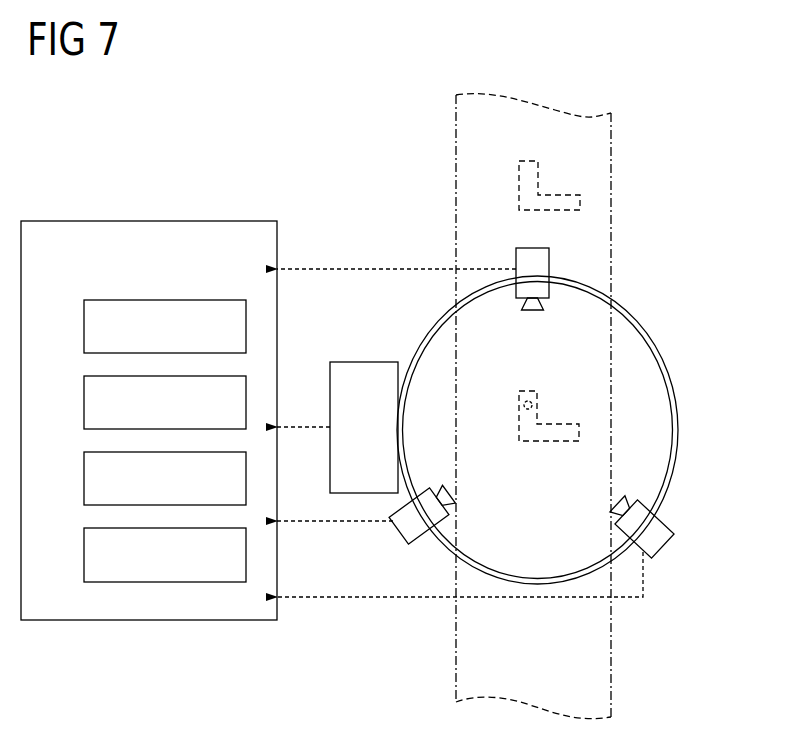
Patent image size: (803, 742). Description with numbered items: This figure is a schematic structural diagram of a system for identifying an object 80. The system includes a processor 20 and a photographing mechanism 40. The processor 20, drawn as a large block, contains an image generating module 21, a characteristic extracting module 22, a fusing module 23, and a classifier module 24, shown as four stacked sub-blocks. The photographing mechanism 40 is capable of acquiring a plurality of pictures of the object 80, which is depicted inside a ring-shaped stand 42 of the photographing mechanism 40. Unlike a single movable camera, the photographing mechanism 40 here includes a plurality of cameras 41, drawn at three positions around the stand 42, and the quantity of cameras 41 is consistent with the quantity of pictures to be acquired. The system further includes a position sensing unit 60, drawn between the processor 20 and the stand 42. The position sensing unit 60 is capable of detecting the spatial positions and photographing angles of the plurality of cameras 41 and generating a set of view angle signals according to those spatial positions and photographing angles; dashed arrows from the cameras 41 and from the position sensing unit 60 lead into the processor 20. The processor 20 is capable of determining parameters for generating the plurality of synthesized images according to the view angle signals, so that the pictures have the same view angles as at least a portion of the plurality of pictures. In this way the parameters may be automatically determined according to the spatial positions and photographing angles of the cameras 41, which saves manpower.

The processor 20 is at (73, 277).
The image generating module 21 is at (174, 342).
The characteristic extracting module 22 is at (174, 419).
The fusing module 23 is at (174, 495).
The classifier module 24 is at (174, 572).
The position sensing unit 60 is at (378, 444).
The photographing mechanism 40 is at (628, 296).
The camera 41 is at (523, 263).
The stand 42 is at (657, 347).
The object 80 is at (546, 442).